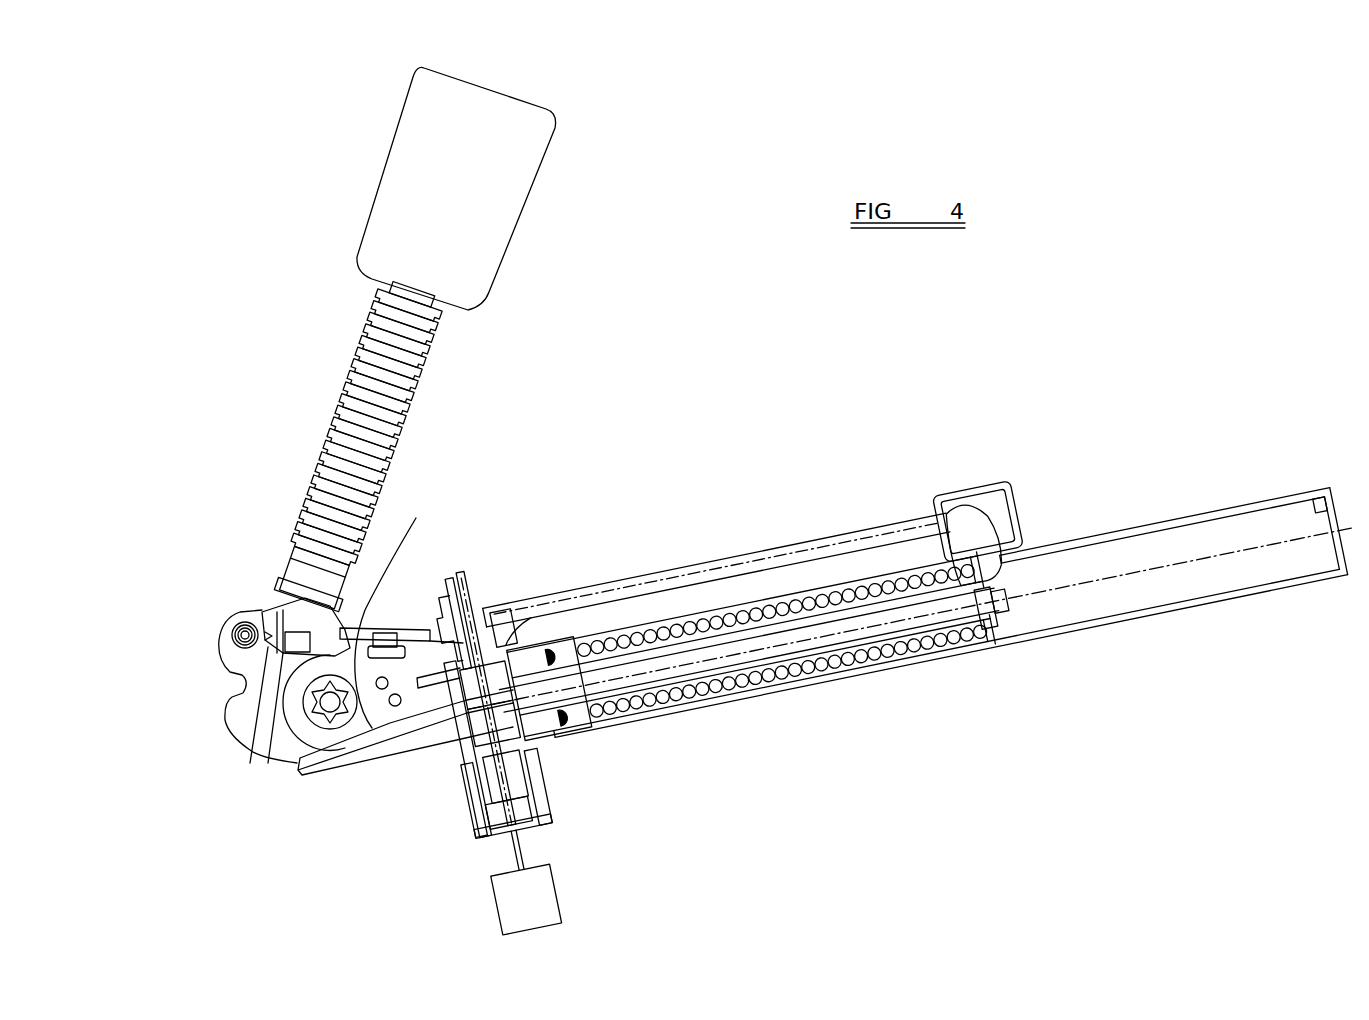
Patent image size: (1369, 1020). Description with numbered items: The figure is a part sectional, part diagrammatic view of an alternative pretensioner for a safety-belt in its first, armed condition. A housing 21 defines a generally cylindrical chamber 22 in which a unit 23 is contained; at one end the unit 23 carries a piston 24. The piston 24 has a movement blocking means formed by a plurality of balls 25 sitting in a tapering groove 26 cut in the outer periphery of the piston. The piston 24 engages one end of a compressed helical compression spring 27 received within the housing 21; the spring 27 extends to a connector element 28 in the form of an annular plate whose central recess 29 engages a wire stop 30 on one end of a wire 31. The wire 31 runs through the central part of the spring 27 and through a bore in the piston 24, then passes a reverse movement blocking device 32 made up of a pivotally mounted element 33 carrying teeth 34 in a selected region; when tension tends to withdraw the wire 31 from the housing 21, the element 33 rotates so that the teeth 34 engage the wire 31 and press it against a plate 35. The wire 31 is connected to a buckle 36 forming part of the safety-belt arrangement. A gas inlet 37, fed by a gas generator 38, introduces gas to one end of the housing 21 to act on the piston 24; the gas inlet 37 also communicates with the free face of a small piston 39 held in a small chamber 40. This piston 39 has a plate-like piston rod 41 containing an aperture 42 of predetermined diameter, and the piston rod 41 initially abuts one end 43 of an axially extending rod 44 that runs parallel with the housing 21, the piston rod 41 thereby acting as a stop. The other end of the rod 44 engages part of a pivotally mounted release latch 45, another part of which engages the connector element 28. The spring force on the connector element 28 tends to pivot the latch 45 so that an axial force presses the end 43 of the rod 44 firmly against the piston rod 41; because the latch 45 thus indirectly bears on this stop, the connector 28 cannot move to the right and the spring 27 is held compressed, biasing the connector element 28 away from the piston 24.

The housing 21 is at (1228, 507).
The chamber 22 is at (1174, 580).
The unit 23 is at (768, 657).
The piston 24 is at (617, 710).
The balls 25 is at (563, 720).
The tapering groove 26 is at (597, 700).
The helical compression spring 27 is at (720, 687).
The connector element 28 is at (1022, 640).
The central recess 29 is at (922, 657).
The wire stop 30 is at (1030, 578).
The wire 31 is at (838, 645).
The reverse movement blocking device 32 is at (308, 740).
The pivotally mounted element 33 is at (290, 708).
The teeth 34 is at (401, 606).
The plate 35 is at (358, 755).
The buckle 36 is at (398, 205).
The gas inlet 37 is at (463, 780).
The gas generator 38 is at (543, 899).
The piston 39 is at (500, 645).
The small chamber 40 is at (430, 762).
The piston rod 41 is at (463, 600).
The aperture 42 is at (490, 648).
The end 43 is at (474, 608).
The axially extending rod 44 is at (802, 547).
The release latch 45 is at (960, 505).